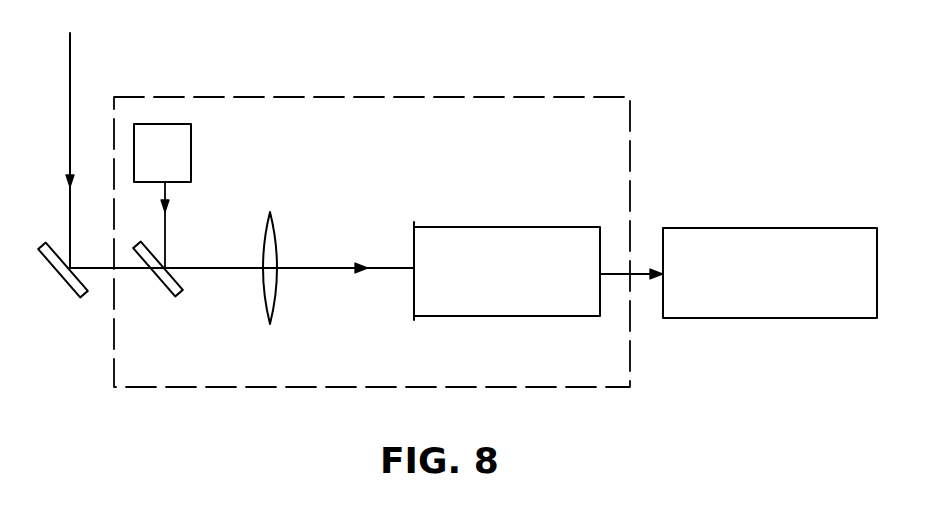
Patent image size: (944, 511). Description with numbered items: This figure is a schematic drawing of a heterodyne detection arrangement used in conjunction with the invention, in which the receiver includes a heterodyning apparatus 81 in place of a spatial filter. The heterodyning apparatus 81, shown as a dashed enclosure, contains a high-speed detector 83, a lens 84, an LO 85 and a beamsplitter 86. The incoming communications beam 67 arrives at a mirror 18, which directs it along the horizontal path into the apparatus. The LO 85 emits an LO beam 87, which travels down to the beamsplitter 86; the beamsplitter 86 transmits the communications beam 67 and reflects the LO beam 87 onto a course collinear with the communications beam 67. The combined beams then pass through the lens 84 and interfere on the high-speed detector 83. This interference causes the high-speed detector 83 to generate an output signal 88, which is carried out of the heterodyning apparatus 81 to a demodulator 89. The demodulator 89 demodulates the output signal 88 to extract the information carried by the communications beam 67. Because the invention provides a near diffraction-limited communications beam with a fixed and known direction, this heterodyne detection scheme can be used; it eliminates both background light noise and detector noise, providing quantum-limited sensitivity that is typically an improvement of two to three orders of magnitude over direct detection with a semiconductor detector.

The communications beam 67 is at (72, 77).
The heterodyning apparatus 81 is at (424, 98).
The LO 85 is at (176, 165).
The LO beam 87 is at (167, 228).
The mirror 18 is at (68, 288).
The beamsplitter 86 is at (168, 287).
The lens 84 is at (263, 305).
The high-speed detector 83 is at (500, 226).
The output signal 88 is at (616, 272).
The demodulator 89 is at (730, 232).